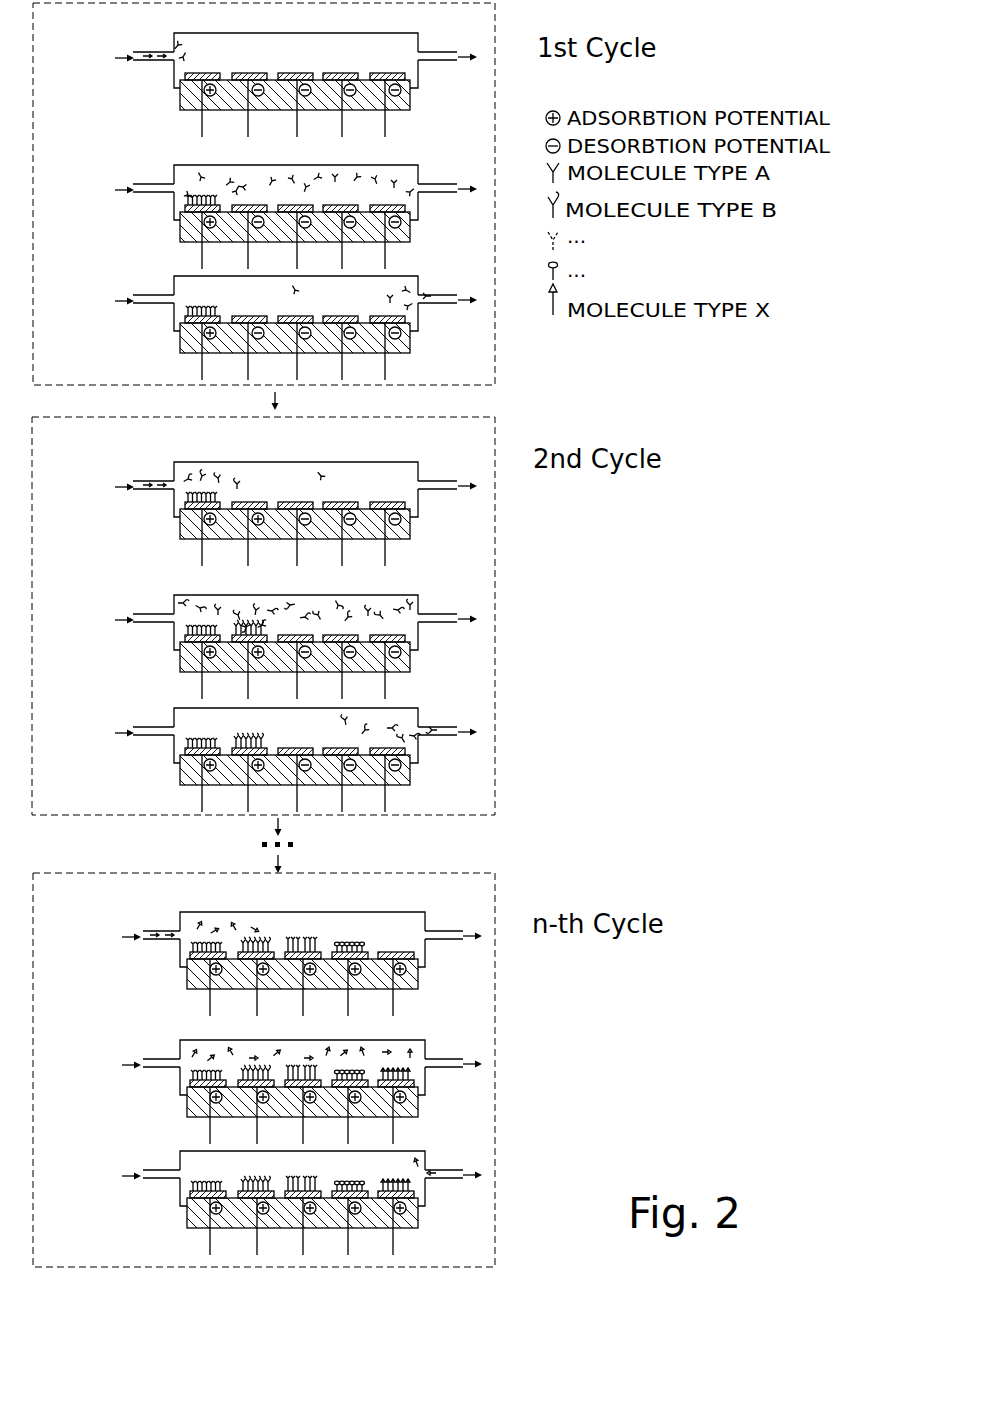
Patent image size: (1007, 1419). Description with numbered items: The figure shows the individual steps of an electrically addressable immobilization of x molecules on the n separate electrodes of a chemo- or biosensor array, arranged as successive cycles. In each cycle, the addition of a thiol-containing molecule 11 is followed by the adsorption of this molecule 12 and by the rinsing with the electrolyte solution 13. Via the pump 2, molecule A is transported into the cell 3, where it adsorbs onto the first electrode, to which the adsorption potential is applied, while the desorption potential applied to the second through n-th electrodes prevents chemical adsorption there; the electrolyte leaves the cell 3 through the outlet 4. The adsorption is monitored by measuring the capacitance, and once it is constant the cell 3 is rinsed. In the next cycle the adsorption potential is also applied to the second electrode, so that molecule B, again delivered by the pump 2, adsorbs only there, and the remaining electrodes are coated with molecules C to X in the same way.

The pump 2 is at (144, 69).
The cell 3 is at (295, 84).
The electrolyte outlet 4 is at (452, 68).
The addition of a thiol-containing molecule 11 is at (267, 510).
The adsorption of the molecule 12 is at (264, 637).
The rinsing with the electrolyte solution 13 is at (264, 763).